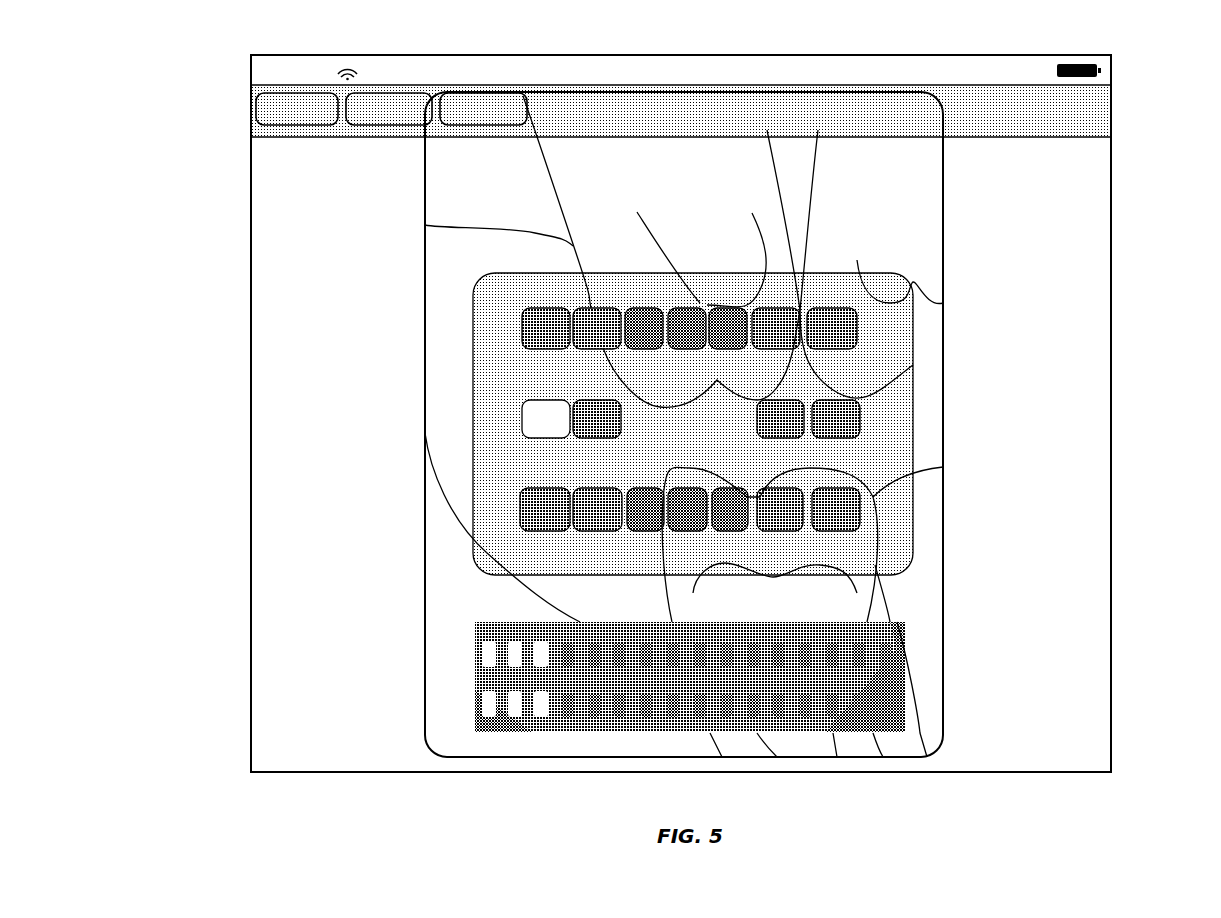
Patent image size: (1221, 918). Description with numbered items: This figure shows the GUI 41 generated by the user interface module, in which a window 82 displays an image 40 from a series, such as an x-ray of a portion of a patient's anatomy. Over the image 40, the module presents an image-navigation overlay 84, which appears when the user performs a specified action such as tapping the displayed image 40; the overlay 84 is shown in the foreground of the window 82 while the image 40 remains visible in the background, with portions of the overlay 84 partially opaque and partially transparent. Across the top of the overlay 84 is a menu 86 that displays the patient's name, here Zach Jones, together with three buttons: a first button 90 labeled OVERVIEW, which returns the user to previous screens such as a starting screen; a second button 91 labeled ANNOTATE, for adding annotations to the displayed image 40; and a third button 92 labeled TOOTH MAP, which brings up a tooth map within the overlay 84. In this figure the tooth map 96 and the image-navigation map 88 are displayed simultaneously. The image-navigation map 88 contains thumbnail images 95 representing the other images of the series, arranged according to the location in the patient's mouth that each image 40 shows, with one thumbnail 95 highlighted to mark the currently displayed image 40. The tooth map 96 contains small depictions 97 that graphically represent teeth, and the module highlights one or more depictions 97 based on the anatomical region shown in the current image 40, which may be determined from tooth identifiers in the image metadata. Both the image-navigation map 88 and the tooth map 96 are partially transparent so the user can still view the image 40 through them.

The GUI 41 is at (255, 40).
The image 40 is at (460, 258).
The window 82 is at (1094, 394).
The image-navigation overlay 84 is at (933, 380).
The menu 86 is at (997, 117).
The image-navigation map 88 is at (641, 424).
The first button 90 is at (307, 122).
The second button 91 is at (398, 122).
The third button 92 is at (497, 125).
The thumbnail images 95 is at (535, 488).
The tooth map 96 is at (630, 675).
The depictions 97 is at (523, 733).